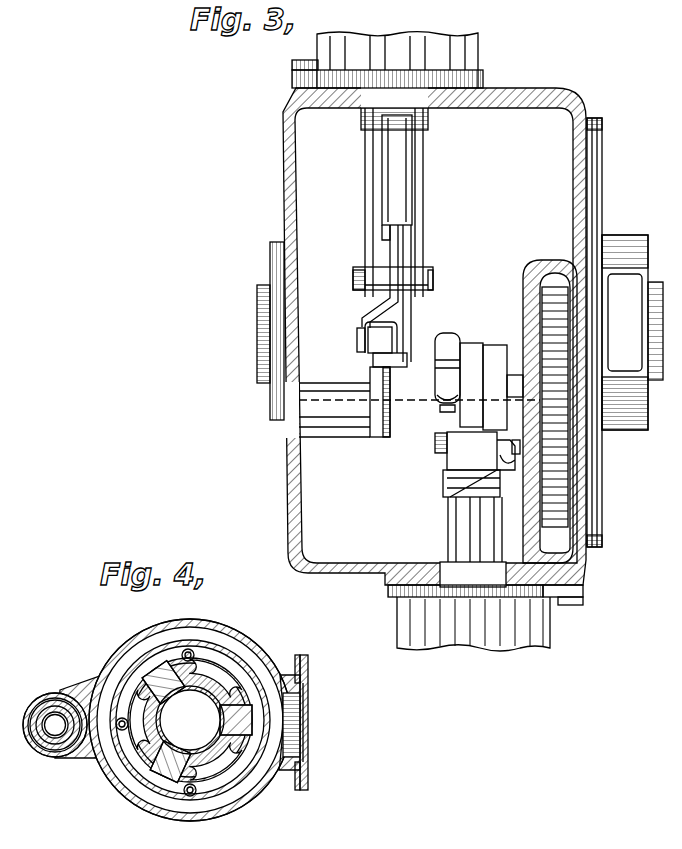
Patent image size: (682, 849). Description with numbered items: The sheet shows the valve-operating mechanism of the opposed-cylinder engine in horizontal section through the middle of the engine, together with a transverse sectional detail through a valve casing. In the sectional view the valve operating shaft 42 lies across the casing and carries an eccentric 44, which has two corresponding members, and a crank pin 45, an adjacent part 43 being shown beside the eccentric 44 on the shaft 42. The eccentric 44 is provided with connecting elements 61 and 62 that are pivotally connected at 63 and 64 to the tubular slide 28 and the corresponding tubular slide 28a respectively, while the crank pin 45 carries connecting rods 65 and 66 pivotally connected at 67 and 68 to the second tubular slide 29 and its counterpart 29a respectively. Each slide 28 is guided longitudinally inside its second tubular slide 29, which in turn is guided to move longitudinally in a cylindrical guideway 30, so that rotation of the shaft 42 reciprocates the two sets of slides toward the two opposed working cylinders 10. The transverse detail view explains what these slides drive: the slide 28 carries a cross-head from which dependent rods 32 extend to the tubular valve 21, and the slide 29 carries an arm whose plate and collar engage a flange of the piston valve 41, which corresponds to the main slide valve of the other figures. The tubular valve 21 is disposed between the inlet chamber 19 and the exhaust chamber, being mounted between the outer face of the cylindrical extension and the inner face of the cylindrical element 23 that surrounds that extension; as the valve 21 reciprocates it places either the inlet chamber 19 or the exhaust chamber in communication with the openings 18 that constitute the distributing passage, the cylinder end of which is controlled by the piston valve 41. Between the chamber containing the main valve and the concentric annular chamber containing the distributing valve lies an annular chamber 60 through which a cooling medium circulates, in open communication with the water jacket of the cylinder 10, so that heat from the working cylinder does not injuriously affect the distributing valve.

In FIG. 3, the working cylinder 10 is at (460, 332).
In FIG. 4, the openings 18 is at (197, 722).
In FIG. 4, the inlet chamber 19 is at (303, 712).
In FIG. 4, the tubular valve 21 is at (225, 660).
In FIG. 4, the cylindrical element 23 is at (284, 744).
In FIG. 3, the tubular slide 28 is at (445, 492).
In FIG. 4, the tubular slide 28 is at (52, 702).
In FIG. 3, the tubular slide 28a is at (412, 186).
In FIG. 3, the second tubular slide 29 is at (448, 540).
In FIG. 4, the second tubular slide 29 is at (64, 748).
In FIG. 3, the tubular slide 29a is at (428, 125).
In FIG. 3, the cylindrical guideway 30 is at (482, 645).
In FIG. 4, the cylindrical guideway 30 is at (40, 750).
In FIG. 4, the dependent rods 32 is at (190, 649).
In FIG. 4, the piston valve 41 is at (190, 720).
In FIG. 3, the valve operating shaft 42 is at (358, 425).
In FIG. 3, the block 43 is at (478, 350).
In FIG. 3, the eccentric 44 is at (390, 412).
In FIG. 3, the crank pin 45 is at (455, 338).
In FIG. 4, the annular chamber 60 is at (225, 768).
In FIG. 3, the connecting element 61 is at (495, 388).
In FIG. 3, the connecting element 62 is at (373, 360).
In FIG. 3, the pivotal connection 63 is at (513, 470).
In FIG. 3, the pivotal connection 64 is at (357, 338).
In FIG. 3, the connecting rod 65 is at (463, 400).
In FIG. 3, the connecting rod 66 is at (412, 305).
In FIG. 3, the pivotal connection 67 is at (437, 445).
In FIG. 3, the pivotal connection 68 is at (434, 282).